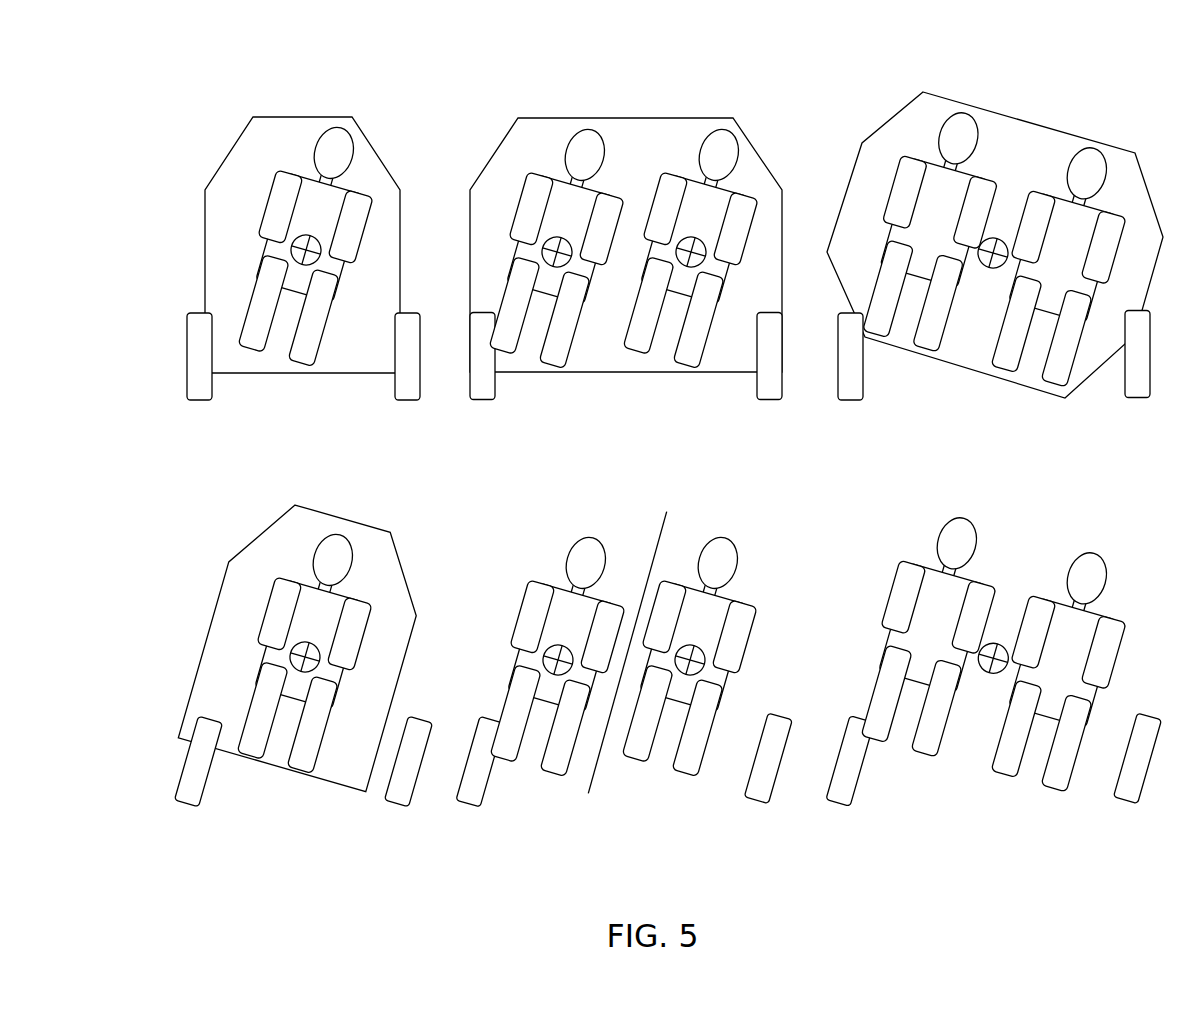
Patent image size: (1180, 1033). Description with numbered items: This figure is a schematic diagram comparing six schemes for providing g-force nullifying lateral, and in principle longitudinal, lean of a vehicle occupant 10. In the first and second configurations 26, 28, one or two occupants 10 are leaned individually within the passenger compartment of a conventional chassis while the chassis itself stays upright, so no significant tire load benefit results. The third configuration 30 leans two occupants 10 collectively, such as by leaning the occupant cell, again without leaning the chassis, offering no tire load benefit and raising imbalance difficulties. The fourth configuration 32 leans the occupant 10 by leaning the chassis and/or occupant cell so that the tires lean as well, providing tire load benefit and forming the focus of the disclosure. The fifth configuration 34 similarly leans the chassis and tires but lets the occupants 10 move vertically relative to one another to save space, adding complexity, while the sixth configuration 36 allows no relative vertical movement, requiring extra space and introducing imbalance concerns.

The occupant 10 is at (378, 165).
The first configuration 26 is at (311, 93).
The second configuration 28 is at (638, 87).
The third configuration 30 is at (1028, 90).
The fourth configuration 32 is at (319, 838).
The fifth configuration 34 is at (634, 818).
The sixth configuration 36 is at (1002, 841).